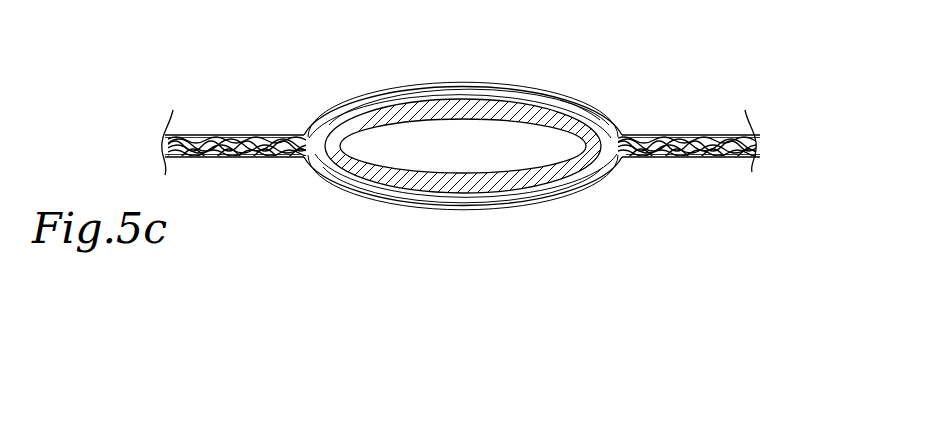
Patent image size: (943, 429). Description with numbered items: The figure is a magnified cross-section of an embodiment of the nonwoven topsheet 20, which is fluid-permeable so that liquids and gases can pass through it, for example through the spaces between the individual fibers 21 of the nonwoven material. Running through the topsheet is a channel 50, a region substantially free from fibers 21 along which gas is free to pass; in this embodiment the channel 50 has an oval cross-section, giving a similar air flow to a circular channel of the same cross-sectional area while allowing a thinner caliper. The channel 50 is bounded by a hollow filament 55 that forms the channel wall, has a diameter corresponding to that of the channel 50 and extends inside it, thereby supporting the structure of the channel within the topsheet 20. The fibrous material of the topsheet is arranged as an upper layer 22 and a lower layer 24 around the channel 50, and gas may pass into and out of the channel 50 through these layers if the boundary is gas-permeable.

The nonwoven topsheet 20 is at (668, 172).
The fibers 21 is at (260, 147).
The upper layer 22 is at (366, 82).
The lower layer 24 is at (400, 213).
The channels 50 is at (486, 162).
The hollow filaments 55 is at (580, 114).